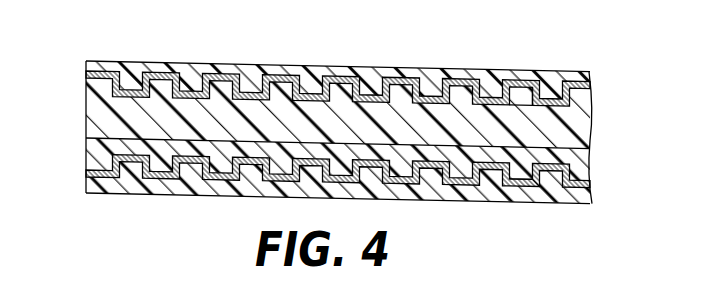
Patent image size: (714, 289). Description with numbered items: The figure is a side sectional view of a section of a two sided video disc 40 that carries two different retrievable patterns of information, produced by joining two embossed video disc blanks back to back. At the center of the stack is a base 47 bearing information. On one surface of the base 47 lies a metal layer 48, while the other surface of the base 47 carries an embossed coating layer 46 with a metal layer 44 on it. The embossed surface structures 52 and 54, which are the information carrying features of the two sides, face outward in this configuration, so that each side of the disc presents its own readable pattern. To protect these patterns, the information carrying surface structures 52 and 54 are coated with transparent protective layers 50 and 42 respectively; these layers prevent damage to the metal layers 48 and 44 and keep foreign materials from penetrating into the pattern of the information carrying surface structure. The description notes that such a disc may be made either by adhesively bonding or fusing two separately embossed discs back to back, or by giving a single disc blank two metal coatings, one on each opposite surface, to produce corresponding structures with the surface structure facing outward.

The two sided video disc 40 is at (125, 193).
The transparent protective layer 42 is at (87, 187).
The metal layer 44 is at (88, 170).
The embossed coating layer 46 is at (87, 147).
The base 47 is at (93, 106).
The metal layer 48 is at (88, 77).
The transparent protective layer 50 is at (98, 67).
The embossed surface structure 52 is at (527, 93).
The embossed surface structure 54 is at (523, 184).